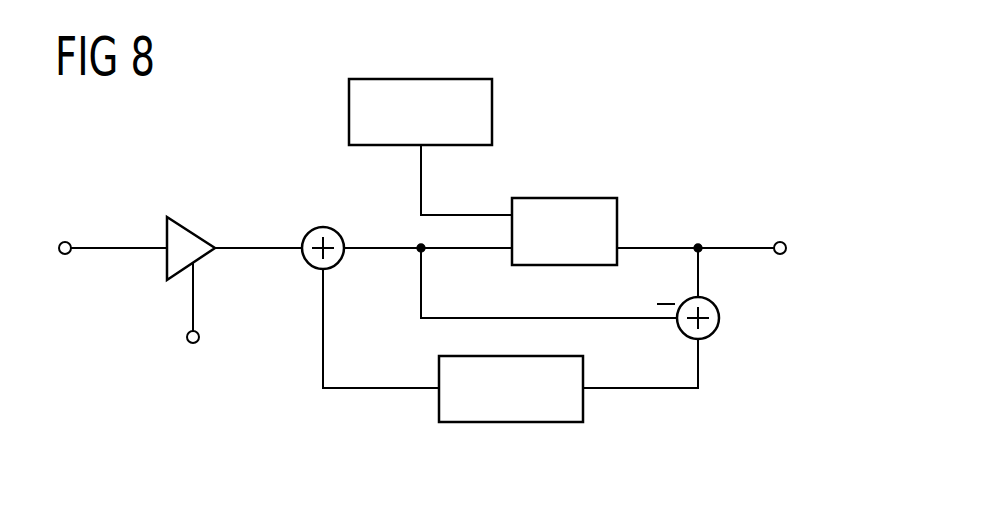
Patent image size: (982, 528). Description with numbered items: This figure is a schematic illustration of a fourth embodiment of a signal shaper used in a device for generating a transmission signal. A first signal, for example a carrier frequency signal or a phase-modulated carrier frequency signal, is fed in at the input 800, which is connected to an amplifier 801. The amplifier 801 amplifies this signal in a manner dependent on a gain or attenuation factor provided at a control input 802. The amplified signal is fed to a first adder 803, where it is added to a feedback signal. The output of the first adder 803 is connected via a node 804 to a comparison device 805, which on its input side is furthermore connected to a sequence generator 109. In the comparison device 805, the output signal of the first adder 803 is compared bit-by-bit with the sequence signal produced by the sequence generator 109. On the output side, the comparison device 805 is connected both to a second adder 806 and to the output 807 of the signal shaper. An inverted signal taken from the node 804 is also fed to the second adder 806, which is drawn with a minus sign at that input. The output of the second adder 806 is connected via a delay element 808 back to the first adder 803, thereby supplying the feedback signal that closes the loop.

The sequence generator 109 is at (492, 113).
The input 800 is at (65, 242).
The amplifier 801 is at (198, 233).
The control input 802 is at (200, 337).
The first adder 803 is at (323, 227).
The node 804 is at (418, 253).
The comparison device 805 is at (565, 198).
The second adder 806 is at (719, 318).
The output 807 is at (780, 242).
The delay element 808 is at (511, 422).